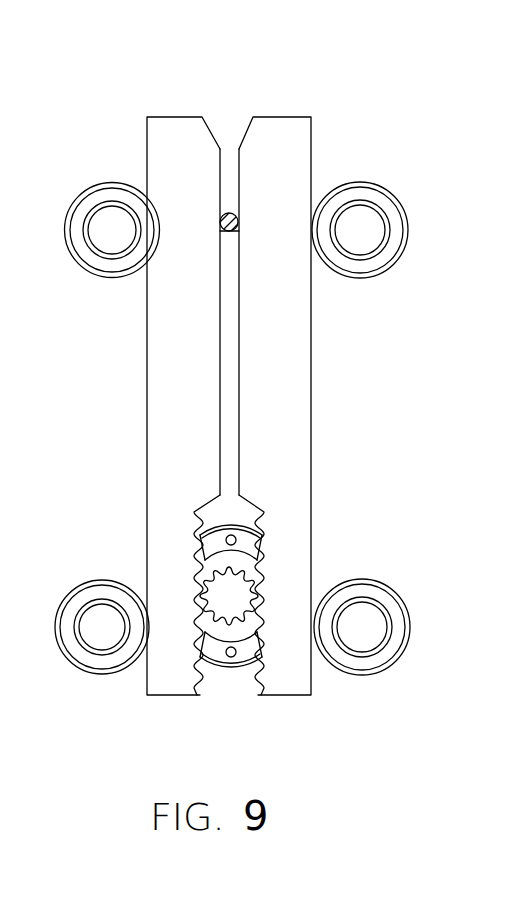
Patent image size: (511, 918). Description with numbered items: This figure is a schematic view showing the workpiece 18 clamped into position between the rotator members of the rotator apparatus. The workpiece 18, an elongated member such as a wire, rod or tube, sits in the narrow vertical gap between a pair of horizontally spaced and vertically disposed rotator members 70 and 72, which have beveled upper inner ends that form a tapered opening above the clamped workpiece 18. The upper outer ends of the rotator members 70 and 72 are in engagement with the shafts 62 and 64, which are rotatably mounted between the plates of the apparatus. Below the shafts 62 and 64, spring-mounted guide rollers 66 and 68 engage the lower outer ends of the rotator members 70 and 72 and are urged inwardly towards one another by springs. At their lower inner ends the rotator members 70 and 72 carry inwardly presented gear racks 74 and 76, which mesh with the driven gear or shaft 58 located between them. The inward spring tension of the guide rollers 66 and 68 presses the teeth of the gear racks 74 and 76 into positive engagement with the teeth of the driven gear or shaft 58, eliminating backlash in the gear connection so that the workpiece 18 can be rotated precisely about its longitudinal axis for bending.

The workpiece 18 is at (226, 213).
The driven gear or shaft 58 is at (233, 585).
The shaft 62 is at (107, 222).
The shaft 64 is at (362, 213).
The guide roller 66 is at (70, 590).
The guide roller 68 is at (387, 597).
The rotator member 70 is at (153, 140).
The rotator member 72 is at (293, 140).
The gear rack 74 is at (197, 664).
The gear rack 76 is at (247, 672).